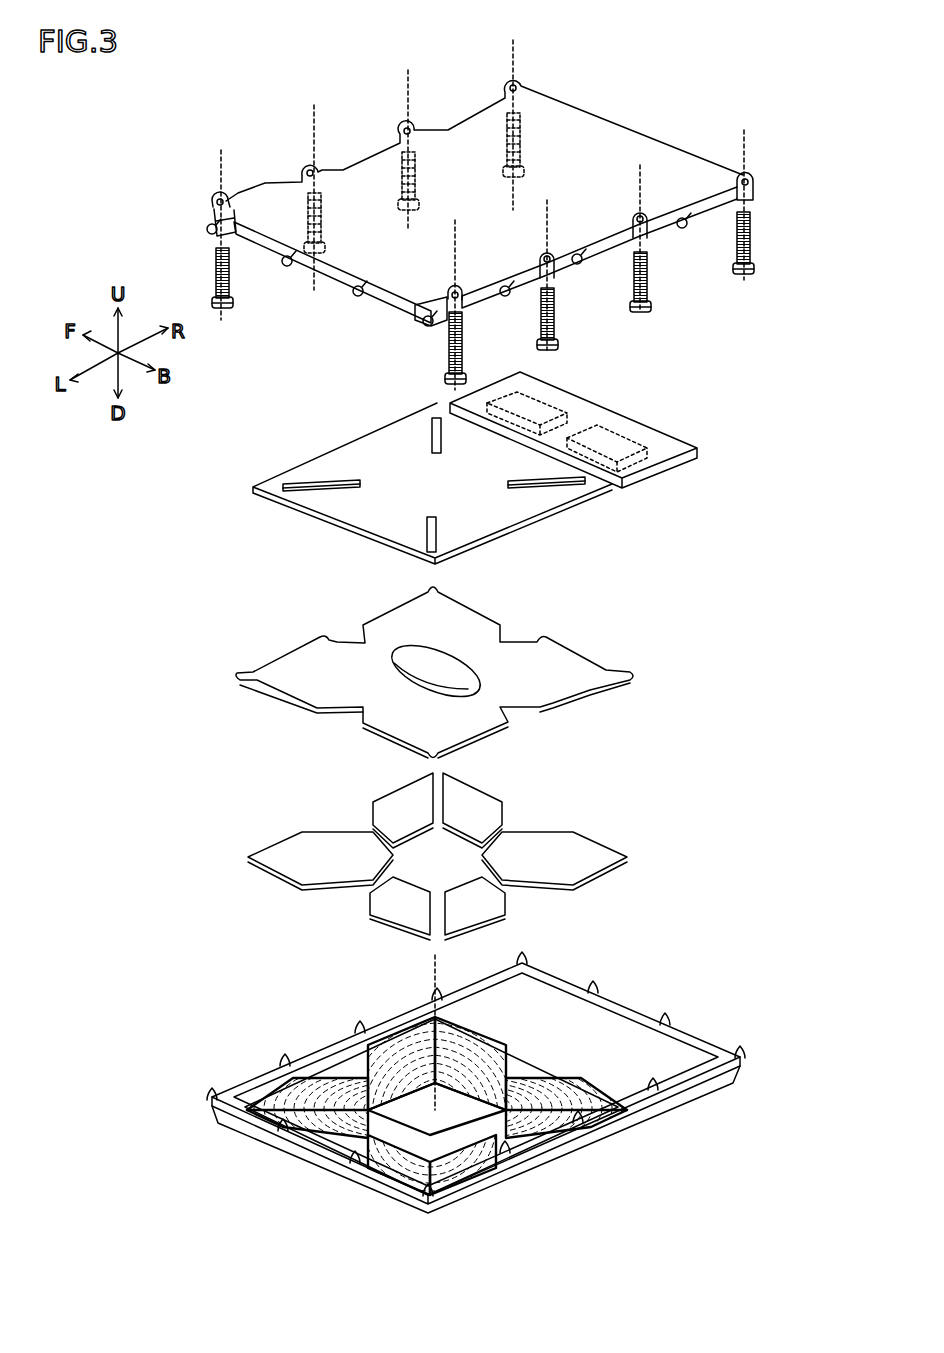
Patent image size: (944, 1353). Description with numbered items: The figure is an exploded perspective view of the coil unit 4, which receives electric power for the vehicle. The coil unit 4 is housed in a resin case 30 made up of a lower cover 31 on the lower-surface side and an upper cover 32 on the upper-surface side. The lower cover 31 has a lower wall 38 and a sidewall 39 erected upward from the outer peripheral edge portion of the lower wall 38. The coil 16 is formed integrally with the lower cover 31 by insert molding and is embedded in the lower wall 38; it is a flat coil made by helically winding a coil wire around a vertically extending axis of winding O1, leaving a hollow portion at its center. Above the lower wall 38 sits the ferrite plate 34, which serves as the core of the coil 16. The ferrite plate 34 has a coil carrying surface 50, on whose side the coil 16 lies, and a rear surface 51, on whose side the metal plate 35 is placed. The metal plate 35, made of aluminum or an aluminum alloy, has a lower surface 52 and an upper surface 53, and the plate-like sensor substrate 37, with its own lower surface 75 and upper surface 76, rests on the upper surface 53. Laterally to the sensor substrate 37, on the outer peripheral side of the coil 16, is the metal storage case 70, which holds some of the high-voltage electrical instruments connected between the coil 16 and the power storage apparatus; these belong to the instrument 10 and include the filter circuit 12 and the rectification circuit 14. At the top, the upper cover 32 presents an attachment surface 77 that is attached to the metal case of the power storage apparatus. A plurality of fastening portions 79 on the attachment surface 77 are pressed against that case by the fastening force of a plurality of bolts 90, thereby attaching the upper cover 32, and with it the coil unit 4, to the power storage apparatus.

The coil unit 4 is at (145, 148).
The instrument 10 is at (736, 368).
The filter circuit 12 is at (547, 398).
The rectification circuit 14 is at (622, 432).
The coil 16 is at (525, 1090).
The case 30 is at (532, 626).
The lower cover 31 is at (776, 1081).
The upper cover 32 is at (662, 135).
The ferrite plate 34 is at (550, 791).
The metal plate 35 is at (730, 646).
The sensor substrate 37 is at (490, 503).
The lower wall 38 is at (527, 1167).
The sidewall 39 is at (613, 1122).
The coil carrying surface 50 is at (403, 932).
The rear surface 51 is at (387, 907).
The lower surface 52 is at (593, 685).
The upper surface 53 is at (568, 665).
The storage case 70 is at (663, 453).
The lower surface 75 is at (300, 512).
The upper surface 76 is at (300, 476).
The attachment surface 77 is at (555, 122).
The fastening portion 79 is at (752, 187).
The bolt 90 is at (752, 243).
The axis of winding O1 is at (440, 966).